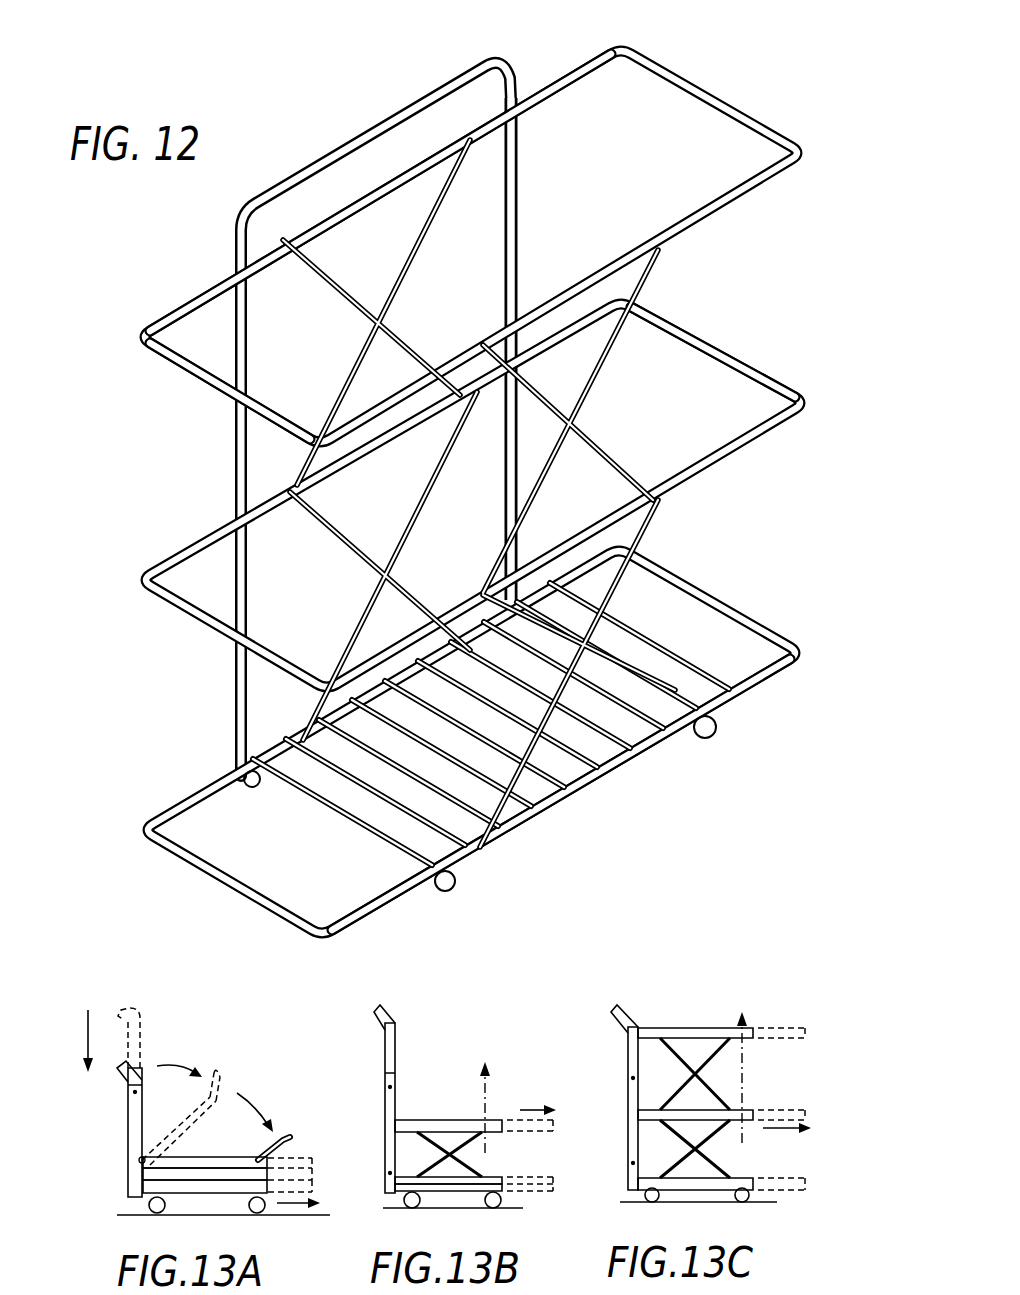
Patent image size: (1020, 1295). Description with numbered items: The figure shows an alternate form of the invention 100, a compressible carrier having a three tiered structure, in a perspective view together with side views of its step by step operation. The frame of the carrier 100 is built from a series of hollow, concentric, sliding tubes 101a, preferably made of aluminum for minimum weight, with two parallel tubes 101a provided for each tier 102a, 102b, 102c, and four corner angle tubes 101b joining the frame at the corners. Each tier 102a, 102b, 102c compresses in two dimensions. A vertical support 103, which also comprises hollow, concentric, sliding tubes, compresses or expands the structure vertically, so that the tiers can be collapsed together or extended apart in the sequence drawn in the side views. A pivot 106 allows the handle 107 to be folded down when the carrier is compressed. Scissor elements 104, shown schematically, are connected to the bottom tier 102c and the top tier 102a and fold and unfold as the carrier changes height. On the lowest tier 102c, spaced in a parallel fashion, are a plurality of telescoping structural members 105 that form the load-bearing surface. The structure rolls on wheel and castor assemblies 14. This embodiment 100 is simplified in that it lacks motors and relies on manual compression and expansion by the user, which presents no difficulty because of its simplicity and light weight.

In FIG. 12, the alternate form of the invention 100 is at (492, 28).
In FIG. 13A, the alternate form of the invention 100 is at (243, 1001).
In FIG. 13B, the alternate form of the invention 100 is at (530, 994).
In FIG. 13C, the alternate form of the invention 100 is at (770, 988).
In FIG. 12, the sliding tubes 101a is at (450, 143).
In FIG. 12, the corner angle tubes 101b is at (160, 312).
In FIG. 12, the tier 102a is at (735, 92).
In FIG. 13A, the tier 102a is at (300, 1163).
In FIG. 13B, the tier 102a is at (530, 1118).
In FIG. 13C, the tier 102a is at (805, 1022).
In FIG. 12, the tier 102b is at (746, 348).
In FIG. 13A, the tier 102b is at (300, 1175).
In FIG. 13B, the tier 102b is at (533, 1175).
In FIG. 13C, the tier 102b is at (805, 1112).
In FIG. 12, the tier 102c is at (761, 613).
In FIG. 13A, the tier 102c is at (300, 1187).
In FIG. 13B, the tier 102c is at (534, 1190).
In FIG. 13C, the tier 102c is at (808, 1183).
In FIG. 12, the vertical support 103 is at (514, 224).
In FIG. 13A, the vertical support 103 is at (133, 1112).
In FIG. 13B, the vertical support 103 is at (390, 1113).
In FIG. 13C, the vertical support 103 is at (627, 1093).
In FIG. 12, the scissor elements 104 is at (410, 247).
In FIG. 13B, the scissor elements 104 is at (473, 1160).
In FIG. 13C, the scissor elements 104 is at (713, 1060).
In FIG. 12, the telescoping structural members 105 is at (320, 807).
In FIG. 13A, the pivot 106 is at (140, 1160).
In FIG. 12, the handle 107 is at (337, 145).
In FIG. 13A, the handle 107 is at (122, 1012).
In FIG. 13B, the handle 107 is at (381, 1012).
In FIG. 13C, the handle 107 is at (622, 1010).
In FIG. 12, the wheel and castor assembly 14 is at (450, 887).
In FIG. 13A, the wheel and castor assembly 14 is at (207, 1205).
In FIG. 13B, the wheel and castor assembly 14 is at (452, 1200).
In FIG. 13C, the wheel and castor assembly 14 is at (697, 1195).